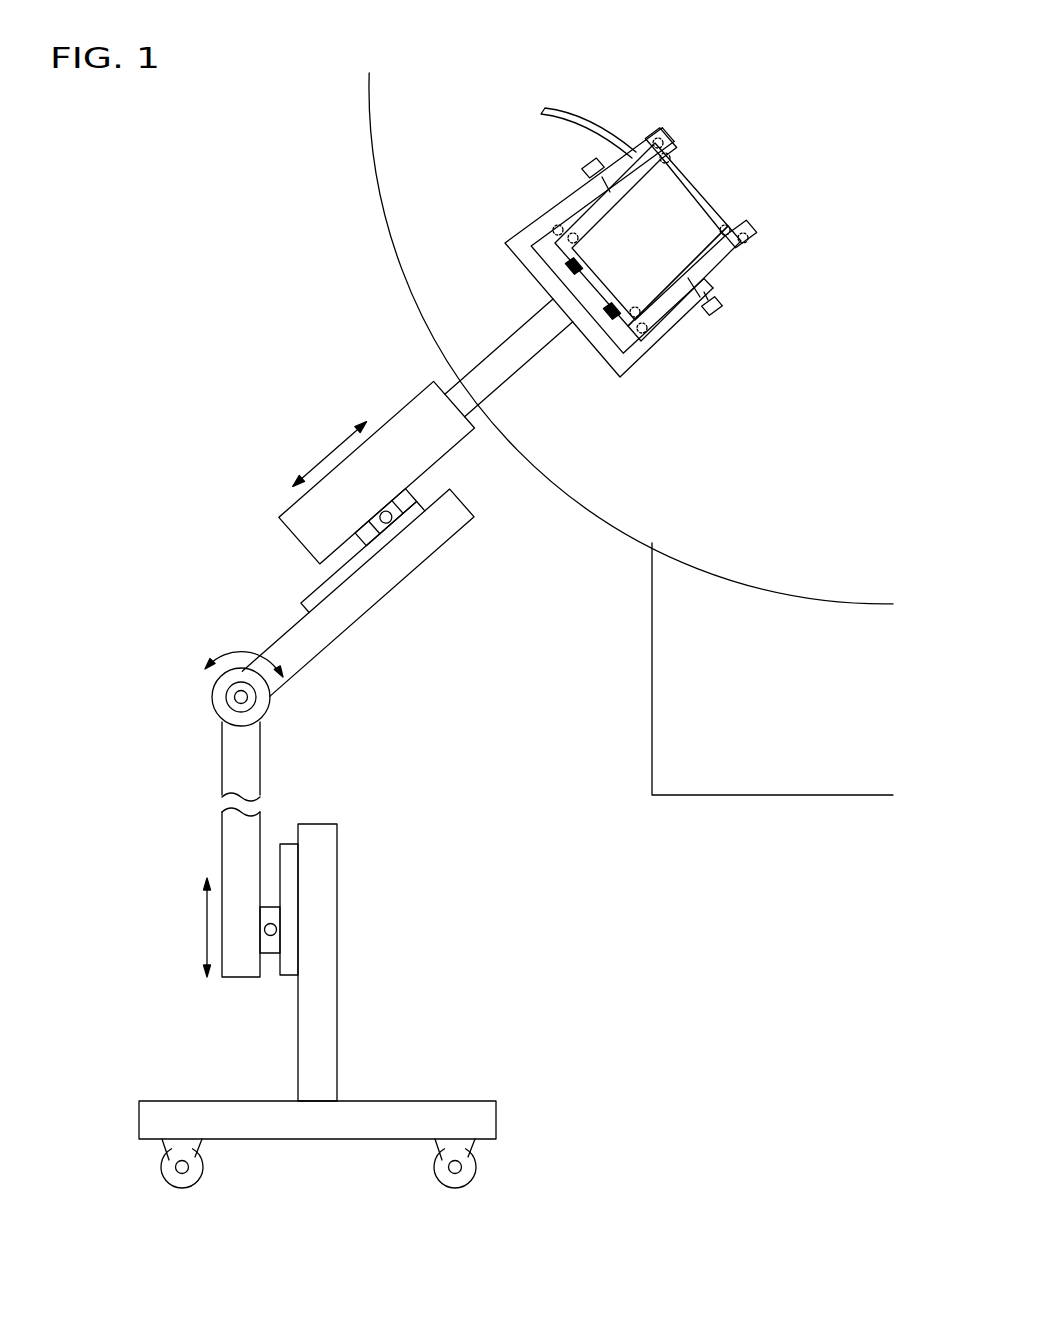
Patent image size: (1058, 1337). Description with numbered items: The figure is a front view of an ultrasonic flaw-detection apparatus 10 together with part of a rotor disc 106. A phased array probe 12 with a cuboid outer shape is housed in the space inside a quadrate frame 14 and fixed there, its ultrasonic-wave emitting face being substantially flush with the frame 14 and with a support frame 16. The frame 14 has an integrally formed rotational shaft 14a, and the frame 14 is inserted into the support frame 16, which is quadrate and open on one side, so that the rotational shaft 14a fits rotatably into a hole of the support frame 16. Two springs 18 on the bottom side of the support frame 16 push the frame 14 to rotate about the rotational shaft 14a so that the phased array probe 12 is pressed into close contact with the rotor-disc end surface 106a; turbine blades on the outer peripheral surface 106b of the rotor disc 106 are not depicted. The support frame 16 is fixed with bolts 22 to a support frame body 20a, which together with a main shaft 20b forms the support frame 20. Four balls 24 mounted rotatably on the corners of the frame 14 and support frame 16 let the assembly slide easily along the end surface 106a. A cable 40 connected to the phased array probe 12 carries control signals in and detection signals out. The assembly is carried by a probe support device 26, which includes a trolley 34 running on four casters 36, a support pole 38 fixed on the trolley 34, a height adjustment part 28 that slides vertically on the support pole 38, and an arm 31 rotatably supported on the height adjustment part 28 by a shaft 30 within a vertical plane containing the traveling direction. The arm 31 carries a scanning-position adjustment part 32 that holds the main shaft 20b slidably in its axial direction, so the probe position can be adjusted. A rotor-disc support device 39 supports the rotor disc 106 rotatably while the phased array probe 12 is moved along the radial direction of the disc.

The ultrasonic flaw-detection apparatus 10 is at (788, 120).
The phased array probe 12 is at (686, 222).
The frame 14 is at (693, 185).
The rotational shaft 14a is at (690, 295).
The support frame 16 is at (730, 253).
The spring 18 is at (567, 261).
The support frame 20 is at (577, 342).
The support frame body 20a is at (535, 225).
The main shaft 20b is at (490, 348).
The bolt 22 is at (714, 312).
The ball 24 is at (660, 143).
The probe support device 26 is at (340, 969).
The height adjustment part 28 is at (232, 767).
The shaft 30 is at (226, 698).
The arm 31 is at (340, 616).
The scanning-position adjustment part 32 is at (300, 596).
The trolley 34 is at (415, 1100).
The caster 36 is at (472, 1172).
The support pole 38 is at (320, 920).
The rotor-disc support device 39 is at (652, 660).
The cable 40 is at (586, 122).
The rotor disc 106 is at (365, 146).
The rotor-disc end surface 106a is at (405, 110).
The outer peripheral surface 106b is at (384, 213).